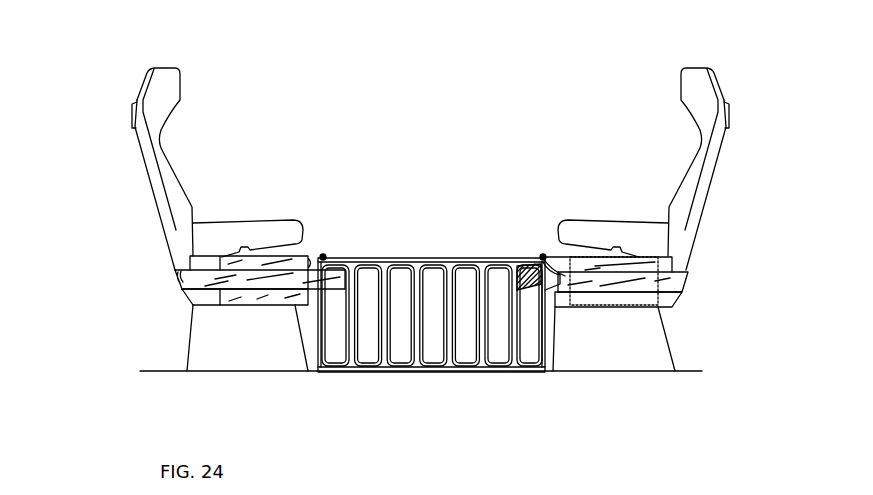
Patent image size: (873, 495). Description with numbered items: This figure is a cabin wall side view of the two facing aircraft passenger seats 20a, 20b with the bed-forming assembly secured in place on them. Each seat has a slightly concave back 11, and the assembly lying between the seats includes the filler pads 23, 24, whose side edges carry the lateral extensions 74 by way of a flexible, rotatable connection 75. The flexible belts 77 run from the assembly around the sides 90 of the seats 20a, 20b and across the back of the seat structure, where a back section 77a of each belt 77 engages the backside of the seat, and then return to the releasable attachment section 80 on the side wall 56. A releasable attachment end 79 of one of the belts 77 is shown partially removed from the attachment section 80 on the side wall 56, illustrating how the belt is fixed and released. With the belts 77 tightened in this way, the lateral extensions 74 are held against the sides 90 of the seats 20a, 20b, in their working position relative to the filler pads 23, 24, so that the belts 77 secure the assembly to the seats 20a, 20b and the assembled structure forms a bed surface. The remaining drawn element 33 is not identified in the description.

The seat 20a is at (737, 93).
The seat 20b is at (112, 128).
The filler pad 23 is at (200, 263).
The filler pad 24 is at (667, 262).
The flexible, rotatable connection 75 is at (263, 252).
The battery pack 33 is at (427, 258).
The side wall 56 is at (428, 355).
The attachment section 80 is at (517, 270).
The flexible belt 77 is at (283, 283).
The back section of belt 77a is at (173, 282).
The back 11 is at (192, 302).
The seat side 90 is at (210, 297).
The lateral extension 74 is at (220, 297).
The releasable attachment end 79 is at (336, 280).